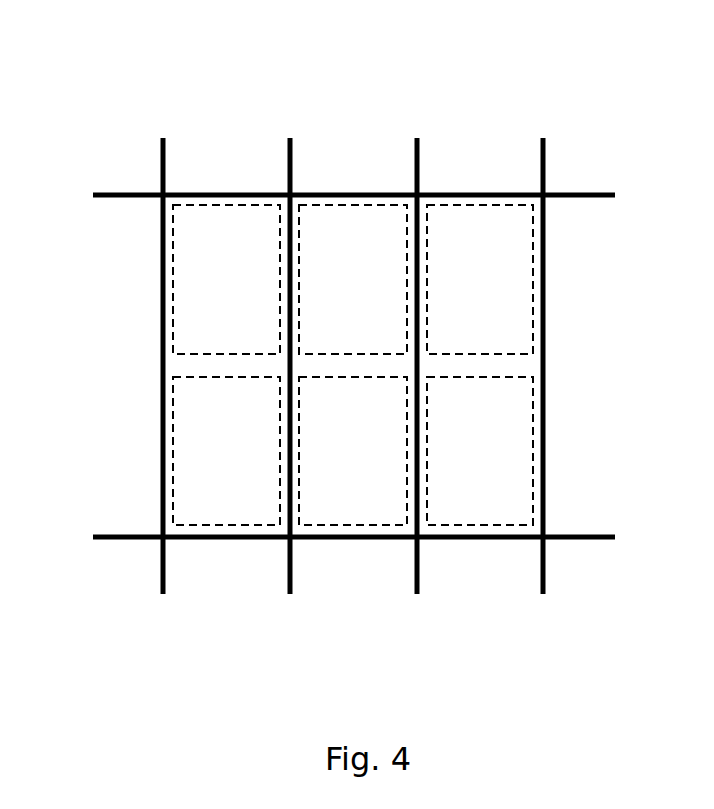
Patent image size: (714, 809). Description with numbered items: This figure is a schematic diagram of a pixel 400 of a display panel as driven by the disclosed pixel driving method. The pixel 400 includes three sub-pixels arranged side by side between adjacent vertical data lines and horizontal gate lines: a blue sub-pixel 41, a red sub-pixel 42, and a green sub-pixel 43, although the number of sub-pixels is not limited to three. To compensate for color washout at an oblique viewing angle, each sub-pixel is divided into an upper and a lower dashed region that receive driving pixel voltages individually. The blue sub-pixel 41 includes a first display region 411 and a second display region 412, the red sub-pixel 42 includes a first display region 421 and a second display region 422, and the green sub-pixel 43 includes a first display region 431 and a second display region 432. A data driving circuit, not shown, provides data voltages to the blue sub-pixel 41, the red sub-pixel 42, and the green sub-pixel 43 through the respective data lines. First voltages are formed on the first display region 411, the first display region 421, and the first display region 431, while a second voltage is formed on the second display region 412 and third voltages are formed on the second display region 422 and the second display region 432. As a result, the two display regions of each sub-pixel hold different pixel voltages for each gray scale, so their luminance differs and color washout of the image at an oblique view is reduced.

The pixel 400 is at (79, 43).
The blue sub-pixel 41 is at (225, 404).
The red sub-pixel 42 is at (352, 404).
The green sub-pixel 43 is at (480, 404).
The first display region 411 is at (249, 294).
The second display region 412 is at (249, 465).
The first display region 421 is at (375, 294).
The second display region 422 is at (375, 465).
The first display region 431 is at (502, 294).
The second display region 432 is at (502, 465).